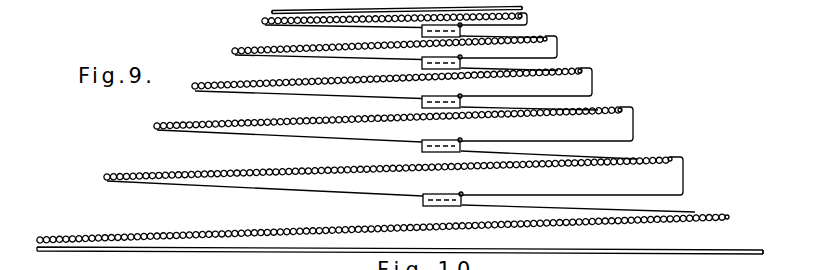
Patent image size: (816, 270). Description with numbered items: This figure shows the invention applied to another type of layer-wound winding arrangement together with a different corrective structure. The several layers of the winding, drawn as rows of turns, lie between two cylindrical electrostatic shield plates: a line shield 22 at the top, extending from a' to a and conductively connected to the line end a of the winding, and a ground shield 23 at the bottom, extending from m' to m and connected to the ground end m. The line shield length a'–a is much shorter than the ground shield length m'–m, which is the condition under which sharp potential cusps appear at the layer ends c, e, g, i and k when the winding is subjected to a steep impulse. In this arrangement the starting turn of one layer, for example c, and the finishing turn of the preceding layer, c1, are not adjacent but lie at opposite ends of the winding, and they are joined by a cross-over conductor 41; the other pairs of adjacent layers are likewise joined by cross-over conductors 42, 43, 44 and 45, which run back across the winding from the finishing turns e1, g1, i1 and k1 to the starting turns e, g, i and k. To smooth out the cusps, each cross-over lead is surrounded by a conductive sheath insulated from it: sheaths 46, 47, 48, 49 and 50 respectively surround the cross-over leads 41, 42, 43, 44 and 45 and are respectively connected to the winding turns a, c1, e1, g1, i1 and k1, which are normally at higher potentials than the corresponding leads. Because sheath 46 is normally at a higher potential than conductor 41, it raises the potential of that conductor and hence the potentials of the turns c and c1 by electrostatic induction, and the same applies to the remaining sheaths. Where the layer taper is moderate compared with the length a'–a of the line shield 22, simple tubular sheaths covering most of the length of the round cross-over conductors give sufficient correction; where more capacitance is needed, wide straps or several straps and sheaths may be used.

The line shield 22 is at (450, 4).
The ground shield 23 is at (687, 254).
The cross-over conductor 41 is at (530, 35).
The cross-over conductor 42 is at (559, 70).
The cross-over conductor 43 is at (598, 107).
The cross-over conductor 44 is at (636, 157).
The cross-over conductor 45 is at (695, 211).
The conductive sheath 46 is at (422, 31).
The conductive sheath 47 is at (422, 63).
The conductive sheath 48 is at (422, 103).
The conductive sheath 49 is at (422, 147).
The conductive sheath 50 is at (423, 203).
The line shield end a' is at (262, 7).
The winding end a is at (531, 8).
The starting turn c is at (384, 21).
The finishing turn c1 is at (514, 41).
The layer end turn e is at (380, 47).
The finishing turn e1 is at (536, 80).
The layer end turn g is at (378, 82).
The finishing turn g1 is at (556, 123).
The layer end turn i is at (380, 120).
The finishing turn i1 is at (579, 173).
The layer end turn k is at (382, 171).
The finishing turn k1 is at (736, 219).
The ground shield end m' is at (372, 240).
The winding end m is at (761, 260).